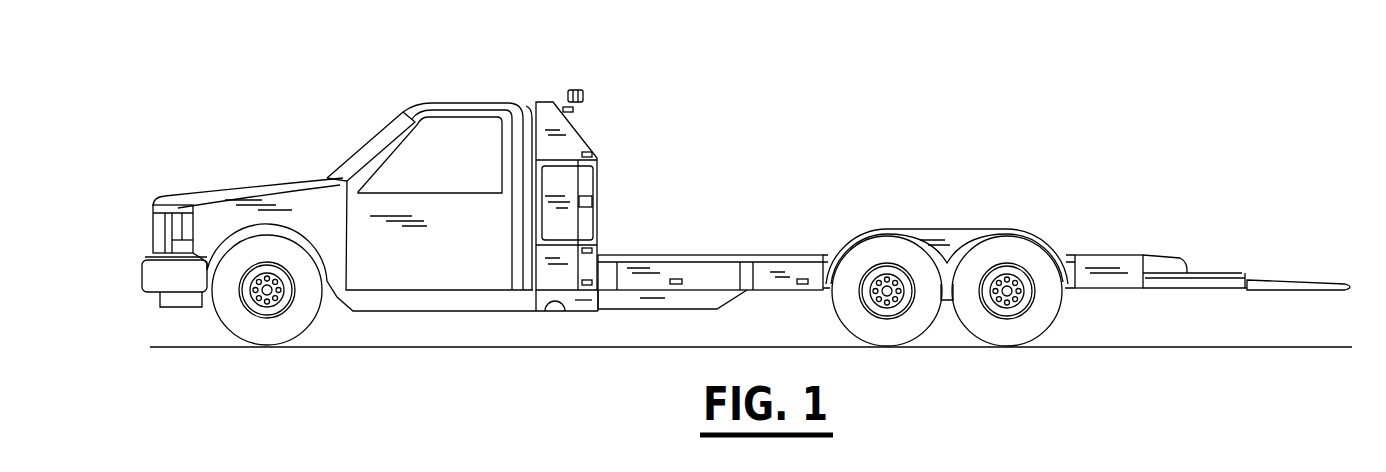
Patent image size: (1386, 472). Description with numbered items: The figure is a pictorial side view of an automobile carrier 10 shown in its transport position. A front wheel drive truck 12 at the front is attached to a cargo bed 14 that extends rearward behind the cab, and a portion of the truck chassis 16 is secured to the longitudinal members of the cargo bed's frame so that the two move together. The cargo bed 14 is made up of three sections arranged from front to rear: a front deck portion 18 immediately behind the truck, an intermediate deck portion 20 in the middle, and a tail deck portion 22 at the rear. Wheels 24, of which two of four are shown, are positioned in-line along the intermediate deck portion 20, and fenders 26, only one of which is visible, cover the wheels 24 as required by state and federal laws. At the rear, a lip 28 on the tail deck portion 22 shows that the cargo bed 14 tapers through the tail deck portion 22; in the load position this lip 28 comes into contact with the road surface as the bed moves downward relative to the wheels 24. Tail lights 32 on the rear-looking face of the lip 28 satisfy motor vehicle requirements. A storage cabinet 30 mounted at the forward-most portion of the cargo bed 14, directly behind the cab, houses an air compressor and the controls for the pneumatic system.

The automobile carrier 10 is at (487, 83).
The front wheel drive truck 12 is at (250, 178).
The cargo bed 14 is at (1102, 290).
The truck chassis 16 is at (547, 303).
The front deck portion 18 is at (650, 253).
The intermediate deck portion 20 is at (820, 255).
The tail deck portion 22 is at (1215, 273).
The wheels 24 is at (990, 250).
The fenders 26 is at (942, 223).
The lip 28 is at (1350, 290).
The storage cabinet 30 is at (596, 147).
The tail lights 32 is at (1183, 272).